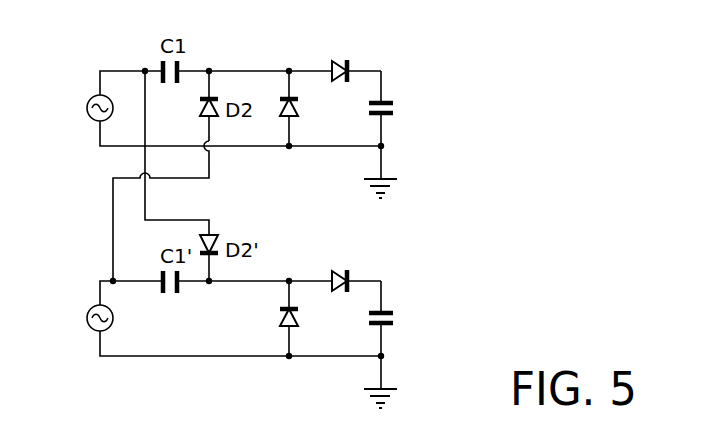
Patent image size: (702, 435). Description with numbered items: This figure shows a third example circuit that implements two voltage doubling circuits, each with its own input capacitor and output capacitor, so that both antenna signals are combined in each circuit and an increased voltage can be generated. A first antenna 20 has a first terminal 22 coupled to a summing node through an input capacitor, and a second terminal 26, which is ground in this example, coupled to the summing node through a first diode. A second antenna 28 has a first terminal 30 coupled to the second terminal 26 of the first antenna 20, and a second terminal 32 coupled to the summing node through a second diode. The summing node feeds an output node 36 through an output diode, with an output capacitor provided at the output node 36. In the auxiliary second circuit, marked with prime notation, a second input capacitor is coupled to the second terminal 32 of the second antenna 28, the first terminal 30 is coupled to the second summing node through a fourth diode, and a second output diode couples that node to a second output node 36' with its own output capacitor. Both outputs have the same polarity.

The first antenna 20 is at (87, 108).
The first terminal of the first antenna 22 is at (100, 77).
The second terminal of the first antenna 26 is at (100, 140).
The output node 36 is at (402, 110).
The second output node 36' is at (406, 320).
The second antenna 28 is at (87, 318).
The second terminal of the second antenna 32 is at (100, 287).
The first terminal of the second antenna 30 is at (100, 350).